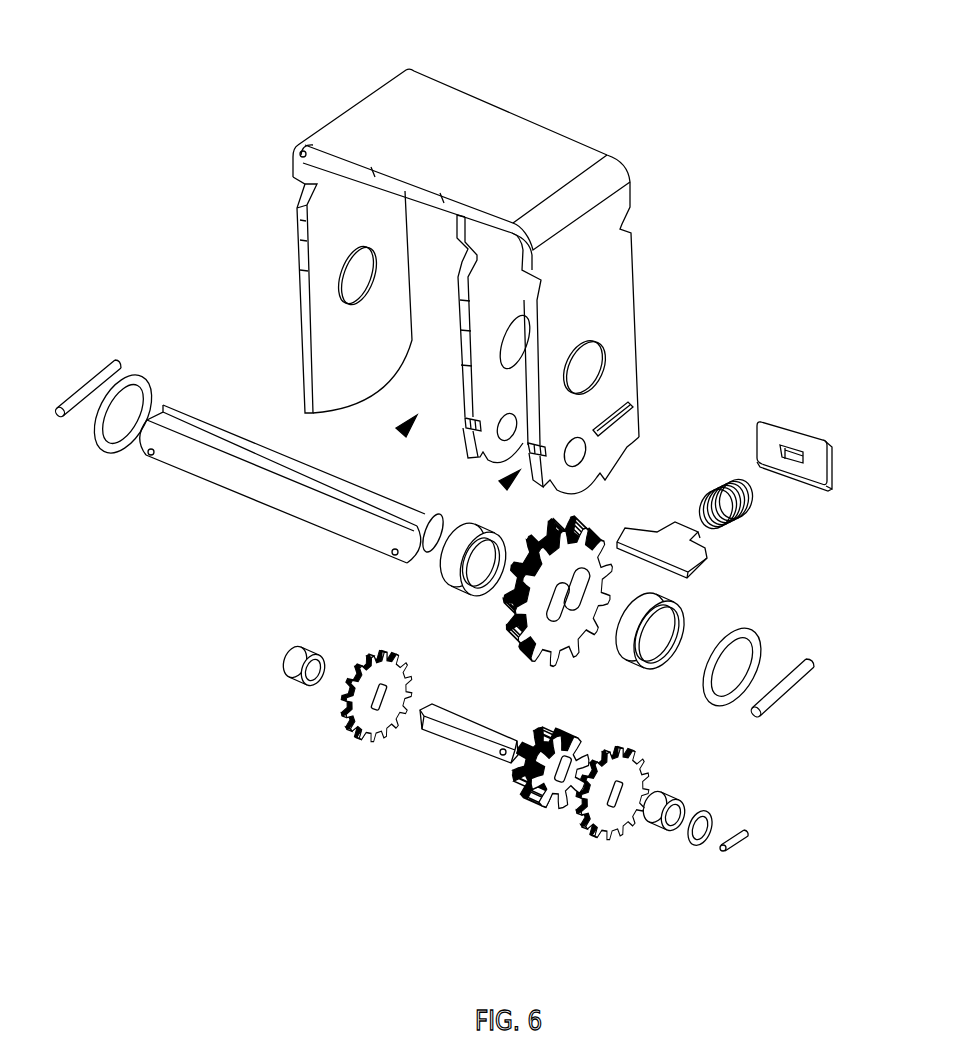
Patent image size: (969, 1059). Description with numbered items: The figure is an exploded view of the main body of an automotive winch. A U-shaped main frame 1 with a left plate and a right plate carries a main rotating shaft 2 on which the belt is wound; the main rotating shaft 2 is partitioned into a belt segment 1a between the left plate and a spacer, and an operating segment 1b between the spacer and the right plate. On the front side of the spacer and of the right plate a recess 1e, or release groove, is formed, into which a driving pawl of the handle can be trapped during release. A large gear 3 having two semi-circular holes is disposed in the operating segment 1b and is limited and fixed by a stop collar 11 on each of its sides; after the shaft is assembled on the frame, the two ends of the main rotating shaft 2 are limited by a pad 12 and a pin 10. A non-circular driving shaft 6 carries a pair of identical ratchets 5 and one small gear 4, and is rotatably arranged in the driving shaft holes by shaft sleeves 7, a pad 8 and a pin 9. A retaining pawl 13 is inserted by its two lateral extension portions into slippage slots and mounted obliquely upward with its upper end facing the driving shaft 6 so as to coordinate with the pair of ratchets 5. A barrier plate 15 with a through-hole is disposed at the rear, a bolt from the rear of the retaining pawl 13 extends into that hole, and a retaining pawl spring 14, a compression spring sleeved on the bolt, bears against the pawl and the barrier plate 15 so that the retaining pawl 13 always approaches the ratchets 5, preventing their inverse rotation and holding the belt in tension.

The main frame 1 is at (466, 264).
The belt segment 1a is at (396, 431).
The operating segment 1b is at (500, 485).
The recess 1e is at (468, 423).
The main rotating shaft 2 is at (226, 480).
The large gear 3 is at (583, 633).
The small gear 4 is at (556, 807).
The ratchets 5 is at (376, 727).
The driving shaft 6 is at (466, 748).
The shaft sleeves 7 is at (297, 673).
The pad 8 is at (713, 827).
The pin 9 is at (747, 836).
The pin 10 is at (90, 372).
The stop collar 11 is at (458, 580).
The pad 12 is at (105, 441).
The retaining pawl 13 is at (700, 553).
The retaining pawl spring 14 is at (747, 512).
The barrier plate 15 is at (835, 462).